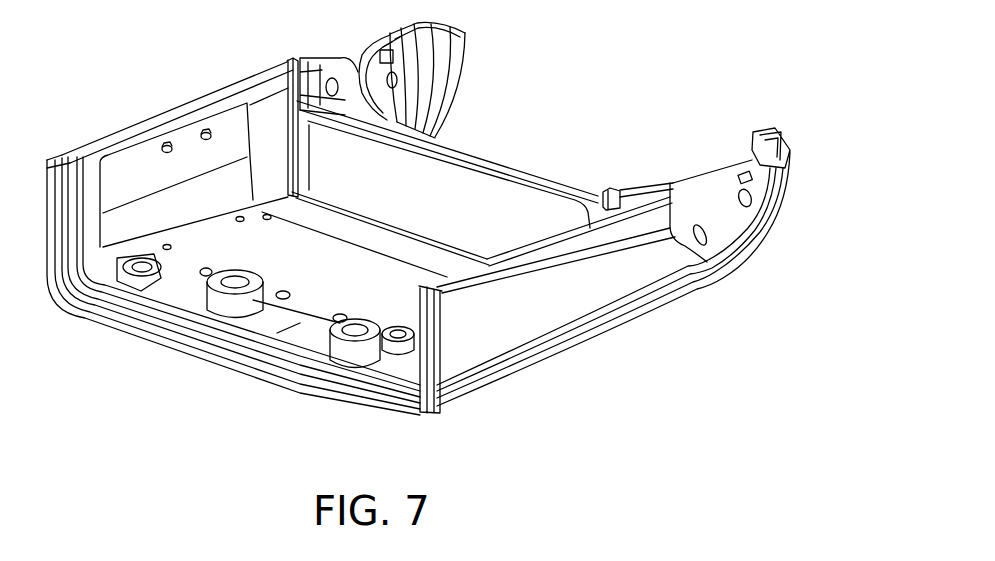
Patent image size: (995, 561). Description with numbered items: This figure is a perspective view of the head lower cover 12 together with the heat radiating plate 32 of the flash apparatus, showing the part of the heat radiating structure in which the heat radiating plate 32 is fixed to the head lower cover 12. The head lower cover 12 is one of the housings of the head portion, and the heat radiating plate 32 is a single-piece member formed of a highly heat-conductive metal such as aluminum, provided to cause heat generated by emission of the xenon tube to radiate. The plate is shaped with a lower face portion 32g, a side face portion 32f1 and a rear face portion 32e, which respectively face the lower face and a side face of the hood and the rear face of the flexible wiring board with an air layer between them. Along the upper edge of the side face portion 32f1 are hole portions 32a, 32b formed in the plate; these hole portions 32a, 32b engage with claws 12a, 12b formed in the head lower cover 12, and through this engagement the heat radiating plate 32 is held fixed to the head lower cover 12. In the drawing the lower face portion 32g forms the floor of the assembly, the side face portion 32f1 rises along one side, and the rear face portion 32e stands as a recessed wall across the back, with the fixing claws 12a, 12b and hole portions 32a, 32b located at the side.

The head lower cover 12 is at (557, 307).
The claw 12a is at (206, 138).
The claw 12b is at (167, 150).
The heat radiating plate 32 is at (322, 330).
The hole portion 32a is at (207, 134).
The hole portion 32b is at (167, 147).
The rear face portion 32e is at (463, 193).
The side face portion 32f1 is at (120, 173).
The lower face portion 32g is at (308, 276).